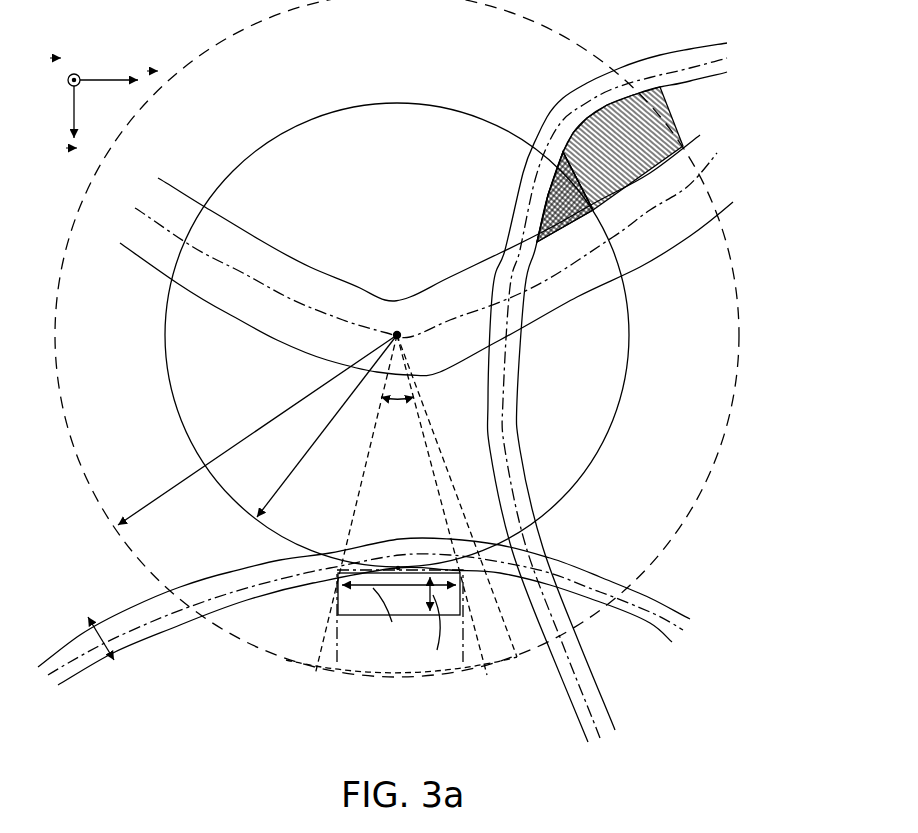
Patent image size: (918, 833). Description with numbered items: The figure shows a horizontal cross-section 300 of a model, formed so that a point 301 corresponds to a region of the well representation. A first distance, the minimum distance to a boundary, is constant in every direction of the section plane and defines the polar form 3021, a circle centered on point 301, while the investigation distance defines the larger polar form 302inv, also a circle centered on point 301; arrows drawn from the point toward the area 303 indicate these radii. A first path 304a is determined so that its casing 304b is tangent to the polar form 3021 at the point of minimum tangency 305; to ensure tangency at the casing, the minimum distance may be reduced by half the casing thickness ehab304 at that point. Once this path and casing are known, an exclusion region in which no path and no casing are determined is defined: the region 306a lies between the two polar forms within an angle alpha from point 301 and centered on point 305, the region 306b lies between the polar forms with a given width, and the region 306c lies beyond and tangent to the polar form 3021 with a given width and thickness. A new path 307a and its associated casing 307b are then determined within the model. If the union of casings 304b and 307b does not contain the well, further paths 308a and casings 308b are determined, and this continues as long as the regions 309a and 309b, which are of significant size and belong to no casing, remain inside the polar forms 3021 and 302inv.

The horizontal cross-section of the model 300 is at (231, 54).
The point 301 is at (396, 327).
The polar form of radius r1 3021 is at (584, 483).
The polar form of radius rinv 302inv is at (106, 516).
The search disc area 303 is at (207, 400).
The first path 304a is at (673, 641).
The casing 304b is at (660, 602).
The casing thickness ehab304 is at (84, 616).
The point of minimum tangency 305 is at (399, 565).
The exclusion region in angle alpha 306a is at (397, 335).
The exclusion region of width eexcl 306b is at (333, 657).
The exclusion region tangent to polar form 306c is at (358, 615).
The new path 307a is at (600, 740).
The new casing 307b is at (609, 712).
The new path 308a is at (450, 236).
The new casing 308b is at (662, 232).
The region not part of any casing 309a is at (555, 194).
The region not part of any casing 309b is at (605, 127).